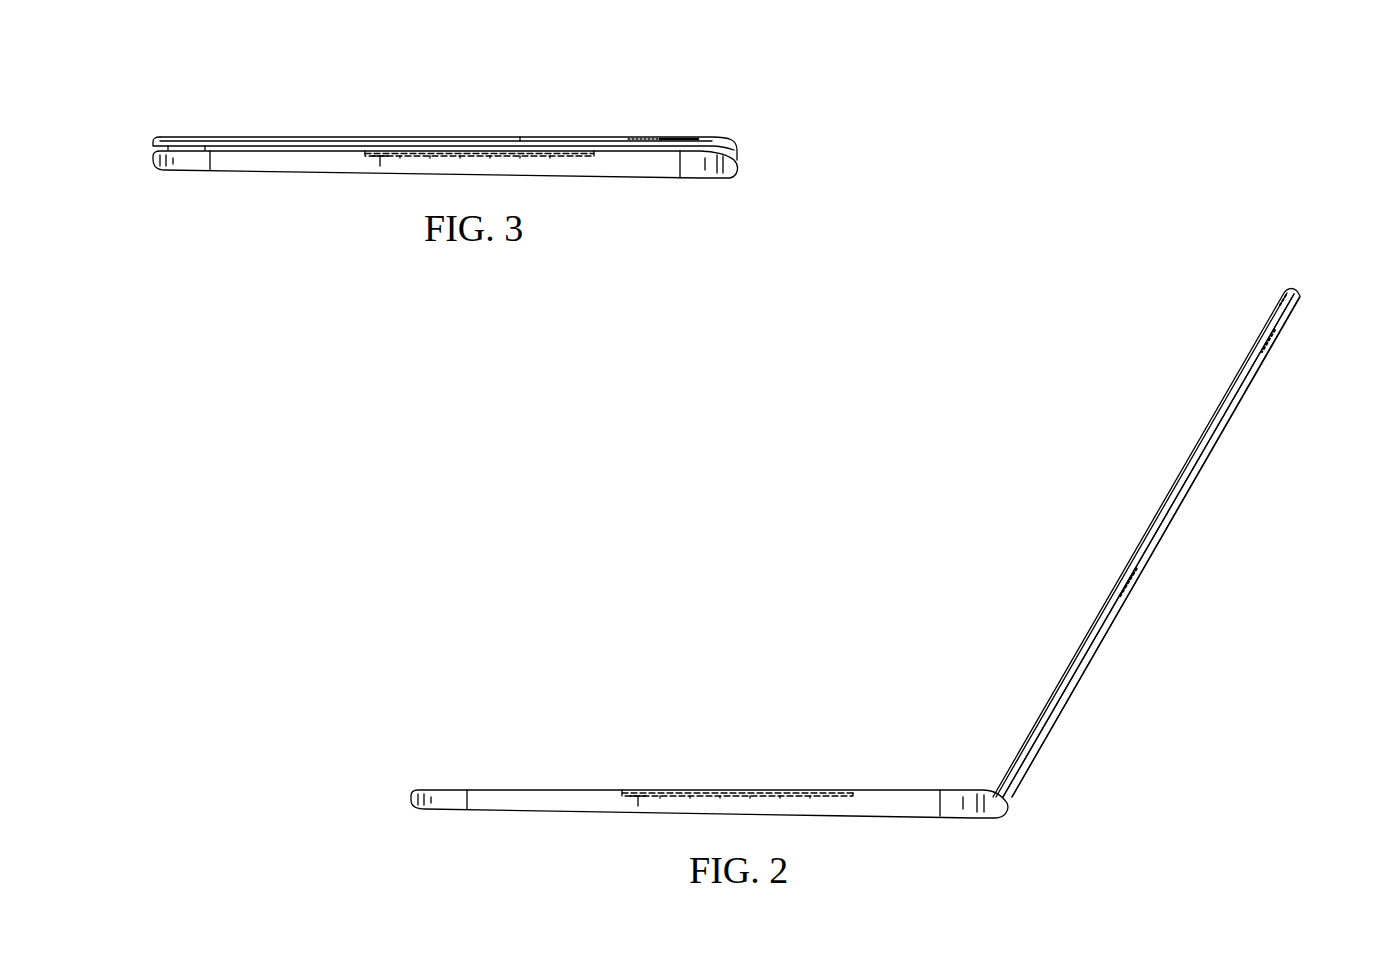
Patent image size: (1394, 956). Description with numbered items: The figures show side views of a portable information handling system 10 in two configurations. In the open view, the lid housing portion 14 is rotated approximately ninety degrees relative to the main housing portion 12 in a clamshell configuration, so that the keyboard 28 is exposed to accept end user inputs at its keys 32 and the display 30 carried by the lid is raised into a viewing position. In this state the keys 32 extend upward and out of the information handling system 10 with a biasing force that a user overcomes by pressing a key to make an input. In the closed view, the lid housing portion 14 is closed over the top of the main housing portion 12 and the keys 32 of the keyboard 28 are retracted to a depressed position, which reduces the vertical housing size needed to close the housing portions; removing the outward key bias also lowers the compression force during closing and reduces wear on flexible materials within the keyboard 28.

In FIG. 3, the portable information handling system 10 is at (452, 88).
In FIG. 2, the portable information handling system 10 is at (828, 546).
In FIG. 3, the main housing portion 12 is at (652, 178).
In FIG. 2, the main housing portion 12 is at (880, 815).
In FIG. 3, the lid housing portion 14 is at (630, 136).
In FIG. 2, the lid housing portion 14 is at (1288, 318).
In FIG. 3, the keyboard 28 is at (585, 156).
In FIG. 2, the keyboard 28 is at (758, 750).
In FIG. 2, the display 30 is at (1178, 480).
In FIG. 3, the keys 32 is at (380, 172).
In FIG. 2, the keys 32 is at (638, 811).